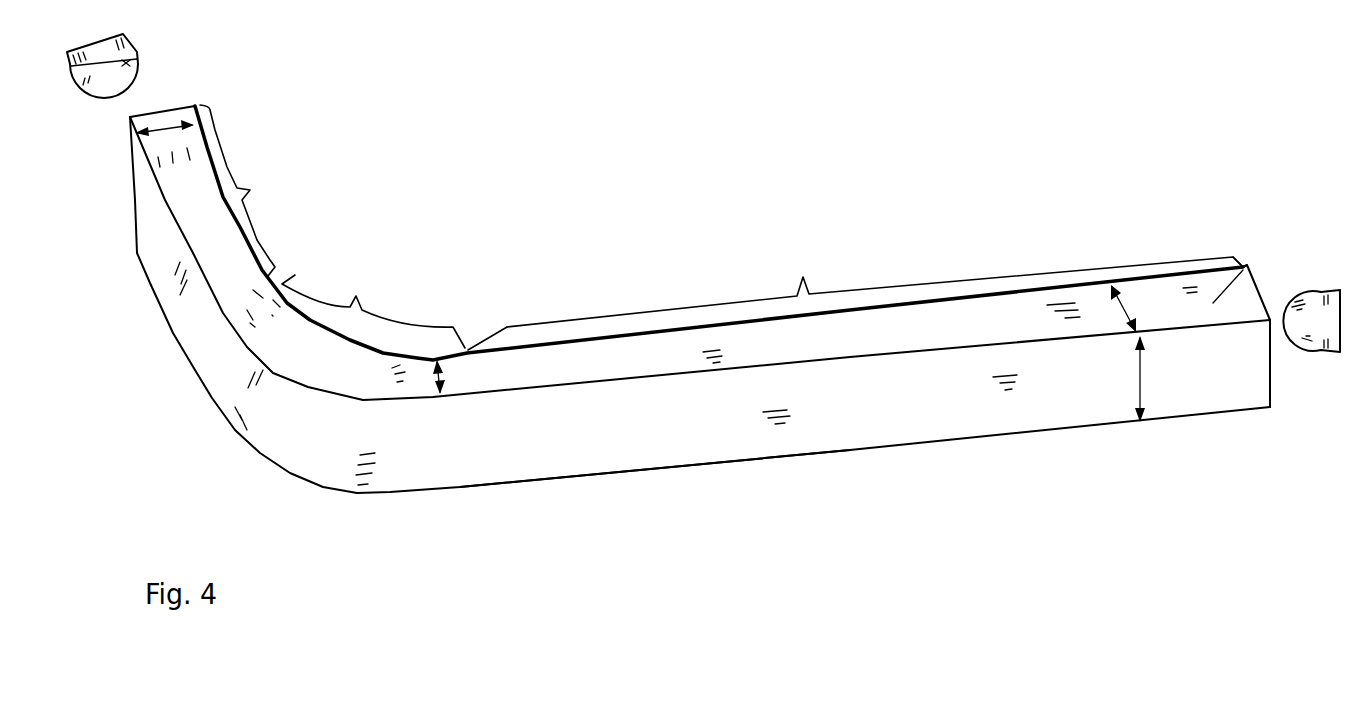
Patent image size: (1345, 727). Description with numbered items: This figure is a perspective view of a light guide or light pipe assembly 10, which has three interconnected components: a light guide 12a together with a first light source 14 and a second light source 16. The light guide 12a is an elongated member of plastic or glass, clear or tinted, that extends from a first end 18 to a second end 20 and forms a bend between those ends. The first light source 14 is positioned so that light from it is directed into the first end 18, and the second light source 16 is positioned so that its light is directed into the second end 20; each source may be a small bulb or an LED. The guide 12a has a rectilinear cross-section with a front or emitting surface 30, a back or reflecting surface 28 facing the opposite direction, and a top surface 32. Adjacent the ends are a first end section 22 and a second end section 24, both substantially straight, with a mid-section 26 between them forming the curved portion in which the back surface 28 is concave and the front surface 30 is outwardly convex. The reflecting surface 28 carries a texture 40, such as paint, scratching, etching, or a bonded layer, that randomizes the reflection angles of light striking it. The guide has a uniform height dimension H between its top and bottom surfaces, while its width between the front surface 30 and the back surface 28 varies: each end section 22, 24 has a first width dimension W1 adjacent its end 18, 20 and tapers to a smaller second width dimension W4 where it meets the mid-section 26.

The light pipe assembly 10 is at (560, 242).
The light guide 12a is at (467, 473).
The first light source 14 is at (138, 66).
The second light source 16 is at (1307, 297).
The first end 18 is at (140, 177).
The second end 20 is at (1230, 383).
The first end section 22 is at (246, 190).
The second end section 24 is at (875, 284).
The mid-section 26 is at (373, 304).
The back surface 28 is at (468, 350).
The front surface 30 is at (900, 420).
The top surface 32 is at (1213, 303).
The texture 40 is at (1248, 265).
The first width dimension W1 is at (163, 133).
The second width dimension W4 is at (443, 387).
The height dimension H is at (1140, 377).